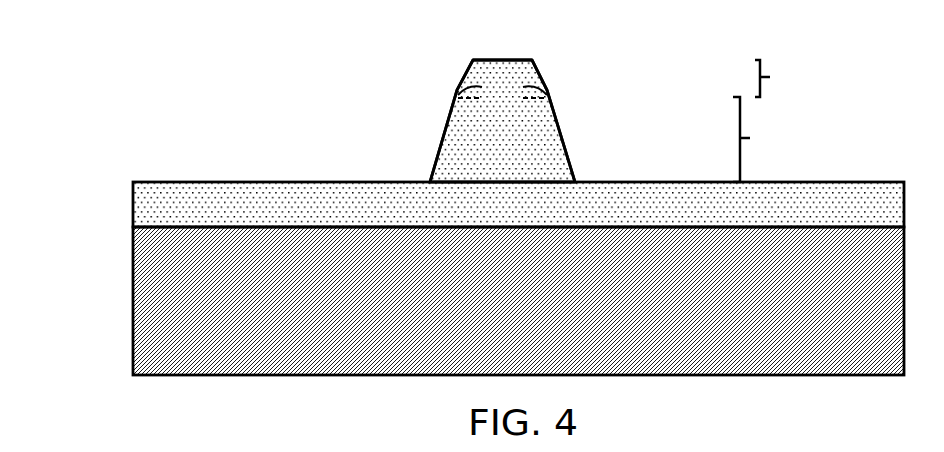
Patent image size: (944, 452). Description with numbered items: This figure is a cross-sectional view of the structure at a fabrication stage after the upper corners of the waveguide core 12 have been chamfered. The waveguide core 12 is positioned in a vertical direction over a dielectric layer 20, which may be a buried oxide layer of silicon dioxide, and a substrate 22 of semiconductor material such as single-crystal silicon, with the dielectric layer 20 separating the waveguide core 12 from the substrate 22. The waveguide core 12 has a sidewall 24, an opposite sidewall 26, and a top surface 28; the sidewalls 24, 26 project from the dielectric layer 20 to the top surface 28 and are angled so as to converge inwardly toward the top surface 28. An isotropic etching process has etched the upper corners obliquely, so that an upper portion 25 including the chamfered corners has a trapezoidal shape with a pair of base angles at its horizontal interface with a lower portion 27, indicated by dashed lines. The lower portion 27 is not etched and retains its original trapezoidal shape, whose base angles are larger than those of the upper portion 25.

The waveguide core 12 is at (518, 133).
The dielectric layer 20 is at (195, 205).
The substrate 22 is at (195, 303).
The sidewall 24 is at (438, 152).
The sidewall 26 is at (572, 162).
The top surface 28 is at (510, 59).
The upper portion 25 is at (780, 78).
The lower portion 27 is at (760, 139).